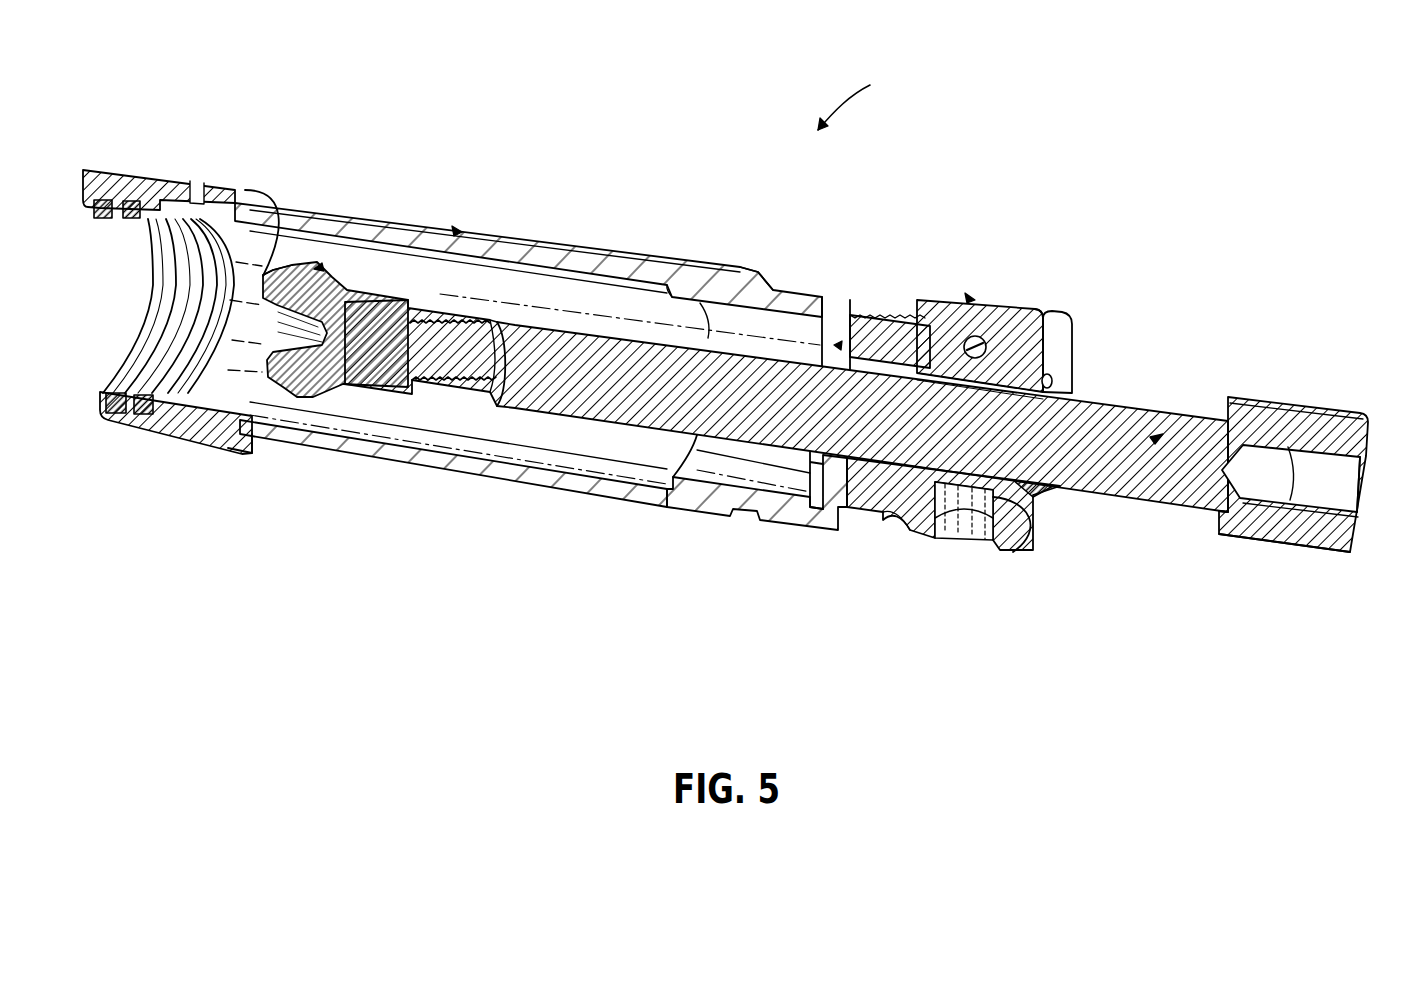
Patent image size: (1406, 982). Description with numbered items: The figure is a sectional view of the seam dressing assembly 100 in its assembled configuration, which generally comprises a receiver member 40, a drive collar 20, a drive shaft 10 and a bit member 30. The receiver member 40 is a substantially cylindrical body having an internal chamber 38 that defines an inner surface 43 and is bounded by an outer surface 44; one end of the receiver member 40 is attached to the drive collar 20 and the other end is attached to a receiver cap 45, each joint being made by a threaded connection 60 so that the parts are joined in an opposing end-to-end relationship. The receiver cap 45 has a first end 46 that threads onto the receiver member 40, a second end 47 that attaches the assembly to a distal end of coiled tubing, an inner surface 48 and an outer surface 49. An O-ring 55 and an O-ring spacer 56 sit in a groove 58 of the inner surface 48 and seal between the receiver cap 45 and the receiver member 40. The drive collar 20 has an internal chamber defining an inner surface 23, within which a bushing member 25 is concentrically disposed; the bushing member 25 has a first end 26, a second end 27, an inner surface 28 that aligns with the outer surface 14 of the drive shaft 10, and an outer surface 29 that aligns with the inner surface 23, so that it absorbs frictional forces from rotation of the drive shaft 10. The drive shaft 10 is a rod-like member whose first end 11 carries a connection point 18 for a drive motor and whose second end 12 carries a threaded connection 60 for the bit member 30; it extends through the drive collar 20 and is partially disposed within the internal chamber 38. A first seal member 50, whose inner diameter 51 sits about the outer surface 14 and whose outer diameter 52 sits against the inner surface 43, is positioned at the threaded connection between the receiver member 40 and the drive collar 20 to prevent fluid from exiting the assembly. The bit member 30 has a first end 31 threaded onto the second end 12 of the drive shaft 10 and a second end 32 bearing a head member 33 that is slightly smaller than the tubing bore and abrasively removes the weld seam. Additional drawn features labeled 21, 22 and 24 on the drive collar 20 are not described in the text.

The seam dressing assembly 100 is at (872, 84).
The drive shaft 10 is at (1152, 437).
The first end of drive shaft 11 is at (1367, 417).
The second end of drive shaft 12 is at (430, 384).
The outer surface of drive shaft 14 is at (1215, 520).
The connection point 18 is at (1356, 500).
The drive collar 20 is at (974, 299).
The key block tab 21 is at (1063, 360).
The lower block 22 is at (850, 505).
The inner surface of drive collar 23 is at (975, 336).
The key block corner 24 is at (1015, 310).
The bushing member 25 is at (1035, 515).
The first end of bushing member 26 is at (1053, 382).
The second end of bushing member 27 is at (880, 338).
The inner surface of bushing member 28 is at (950, 505).
The outer surface of bushing member 29 is at (1000, 540).
The bit member 30 is at (385, 355).
The first end of bit member 31 is at (497, 390).
The second end of bit member 32 is at (266, 284).
The head member 33 is at (324, 266).
The internal chamber 38 is at (560, 313).
The receiver member 40 is at (460, 230).
The inner surface of receiver member 43 is at (612, 460).
The outer surface of receiver member 44 is at (615, 250).
The receiver cap 45 is at (148, 195).
The first end of receiver cap 46 is at (236, 198).
The second end of receiver cap 47 is at (100, 415).
The inner surface of receiver cap 48 is at (123, 368).
The outer surface of receiver cap 49 is at (226, 452).
The first seal member 50 is at (836, 345).
The inner diameter of first seal member 51 is at (818, 462).
The outer diameter of first seal member 52 is at (838, 330).
The O-ring 55 is at (103, 200).
The O-ring spacer 56 is at (160, 420).
The groove 58 is at (150, 420).
The threaded connection 60 is at (500, 340).